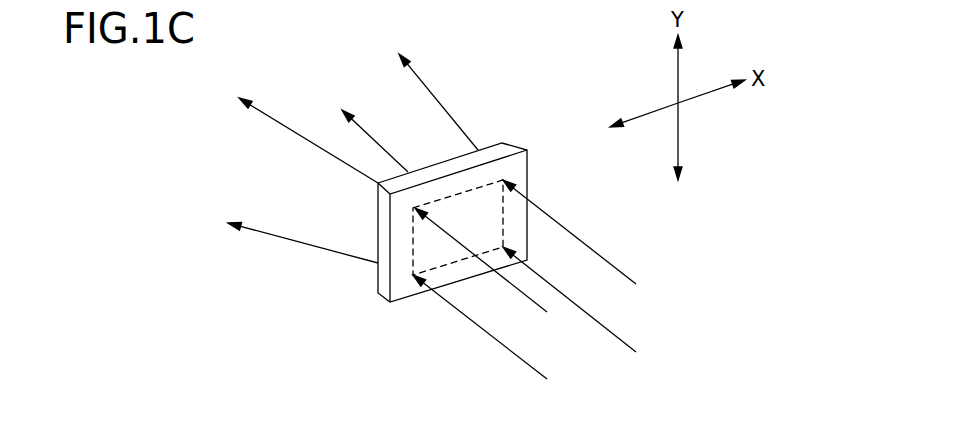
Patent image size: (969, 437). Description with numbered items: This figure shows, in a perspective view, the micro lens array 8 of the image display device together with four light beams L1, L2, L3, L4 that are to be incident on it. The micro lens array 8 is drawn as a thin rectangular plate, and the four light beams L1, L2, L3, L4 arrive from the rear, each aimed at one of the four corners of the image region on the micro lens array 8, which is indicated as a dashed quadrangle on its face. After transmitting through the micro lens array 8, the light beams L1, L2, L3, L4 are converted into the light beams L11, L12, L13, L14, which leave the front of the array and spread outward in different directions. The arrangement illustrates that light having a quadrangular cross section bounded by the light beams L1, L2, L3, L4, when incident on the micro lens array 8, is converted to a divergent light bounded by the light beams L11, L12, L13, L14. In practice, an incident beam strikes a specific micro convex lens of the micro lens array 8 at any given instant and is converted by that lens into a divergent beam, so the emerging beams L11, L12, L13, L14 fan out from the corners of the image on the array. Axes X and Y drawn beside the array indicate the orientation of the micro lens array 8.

The micro lens array 8 is at (377, 285).
The light beam L1 is at (527, 295).
The light beam L2 is at (620, 273).
The light beam L3 is at (490, 338).
The light beam L4 is at (615, 333).
The light beam L11 is at (305, 142).
The light beam L12 is at (452, 115).
The light beam L13 is at (305, 245).
The light beam L14 is at (383, 148).